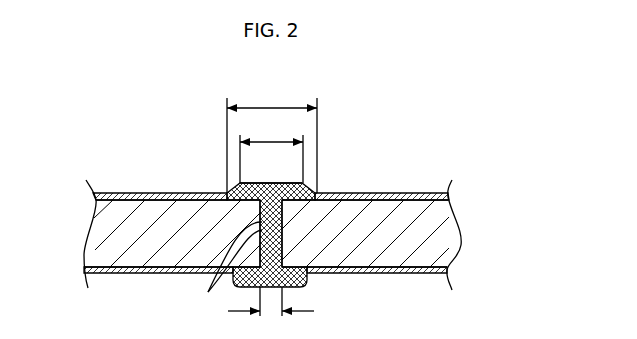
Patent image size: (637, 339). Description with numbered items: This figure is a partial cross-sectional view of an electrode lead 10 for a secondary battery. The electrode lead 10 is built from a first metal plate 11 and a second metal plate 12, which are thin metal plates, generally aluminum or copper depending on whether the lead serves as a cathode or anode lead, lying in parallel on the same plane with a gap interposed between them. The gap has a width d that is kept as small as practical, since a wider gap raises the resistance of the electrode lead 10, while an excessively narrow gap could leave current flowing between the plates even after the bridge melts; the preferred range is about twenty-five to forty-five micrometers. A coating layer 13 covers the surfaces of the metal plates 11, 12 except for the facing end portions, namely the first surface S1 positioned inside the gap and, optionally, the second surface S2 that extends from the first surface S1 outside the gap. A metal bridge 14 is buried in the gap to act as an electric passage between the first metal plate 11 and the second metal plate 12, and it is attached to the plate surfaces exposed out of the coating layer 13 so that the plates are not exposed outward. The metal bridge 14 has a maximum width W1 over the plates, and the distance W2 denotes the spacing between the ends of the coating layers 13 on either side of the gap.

The electrode lead 10 is at (174, 143).
The first metal plate 11 is at (134, 262).
The second metal plate 12 is at (418, 257).
The coating layer 13 is at (143, 193).
The metal bridge 14 is at (306, 281).
The first surface S1 is at (222, 268).
The second surface S2 is at (271, 183).
The maximum width of the metal bridge W1 is at (272, 138).
The distance between the ends of the coating layers W2 is at (271, 151).
The width of the gap d is at (271, 301).